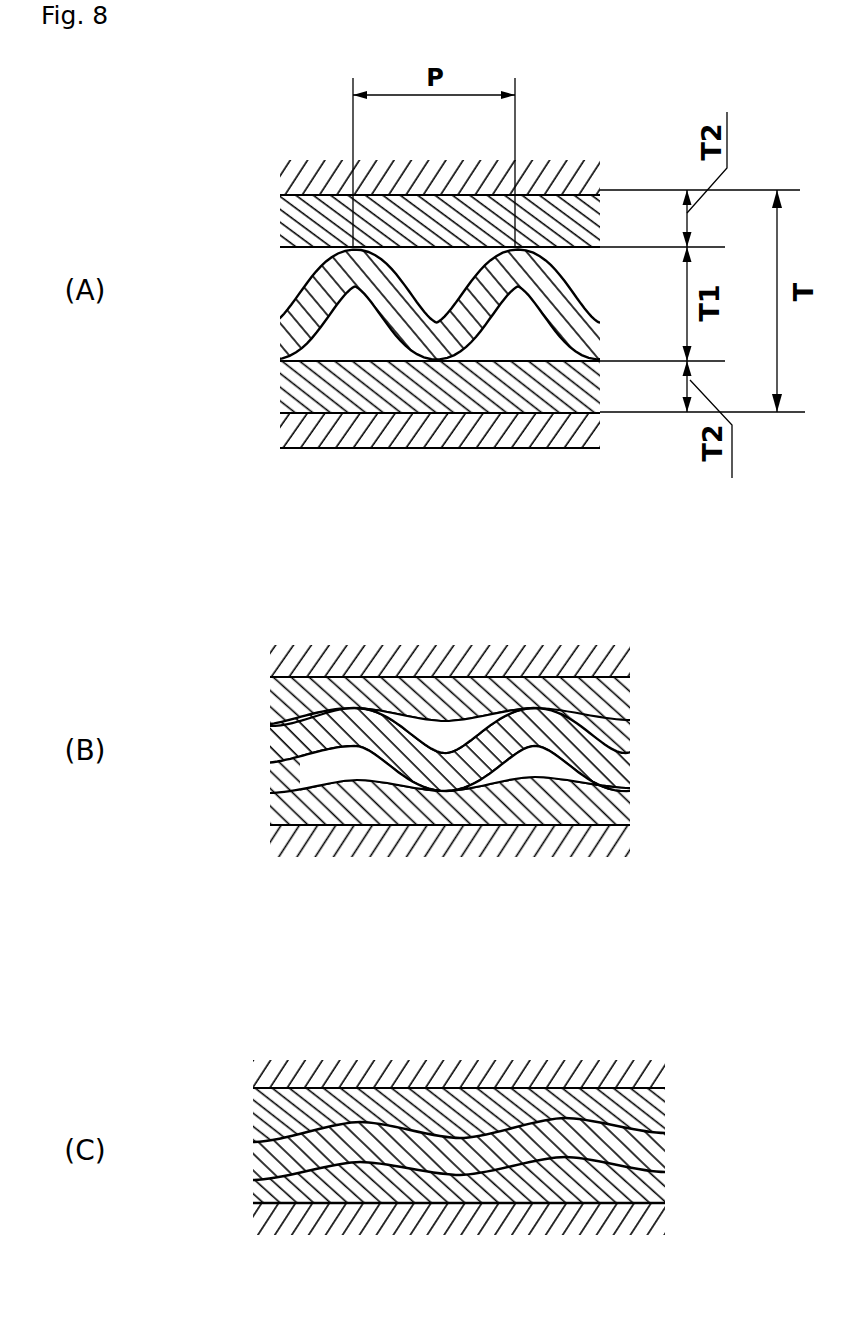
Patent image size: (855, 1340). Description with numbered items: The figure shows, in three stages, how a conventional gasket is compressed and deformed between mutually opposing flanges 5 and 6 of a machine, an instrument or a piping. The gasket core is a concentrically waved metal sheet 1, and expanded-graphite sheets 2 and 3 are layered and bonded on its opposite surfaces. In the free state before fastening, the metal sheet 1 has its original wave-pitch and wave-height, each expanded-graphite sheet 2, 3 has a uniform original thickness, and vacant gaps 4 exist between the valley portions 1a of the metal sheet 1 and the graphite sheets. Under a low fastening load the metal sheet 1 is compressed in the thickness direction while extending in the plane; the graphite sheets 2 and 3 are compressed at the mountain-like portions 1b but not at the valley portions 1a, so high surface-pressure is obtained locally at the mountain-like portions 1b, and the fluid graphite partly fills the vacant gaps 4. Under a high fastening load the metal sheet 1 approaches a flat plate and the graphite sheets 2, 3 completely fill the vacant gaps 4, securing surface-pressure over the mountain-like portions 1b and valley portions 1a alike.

The metal sheet 1 is at (290, 297).
The valley portions 1a is at (438, 321).
The mountain-like portions 1b is at (355, 247).
The expanded-graphite sheet 2 is at (290, 232).
The expanded-graphite sheet 3 is at (290, 383).
The vacant gaps 4 is at (457, 267).
The flange 5 is at (290, 176).
The flange 6 is at (290, 435).